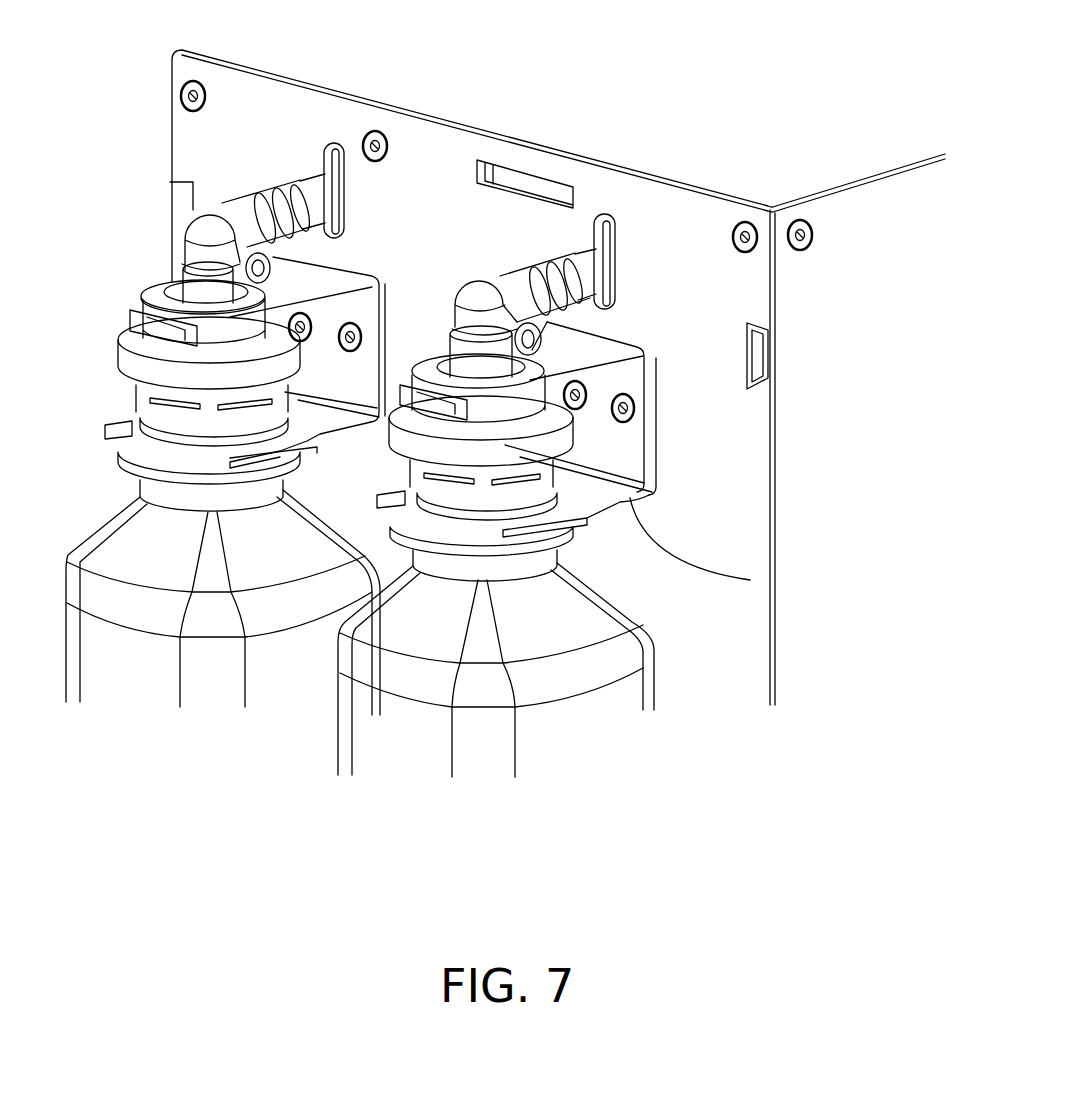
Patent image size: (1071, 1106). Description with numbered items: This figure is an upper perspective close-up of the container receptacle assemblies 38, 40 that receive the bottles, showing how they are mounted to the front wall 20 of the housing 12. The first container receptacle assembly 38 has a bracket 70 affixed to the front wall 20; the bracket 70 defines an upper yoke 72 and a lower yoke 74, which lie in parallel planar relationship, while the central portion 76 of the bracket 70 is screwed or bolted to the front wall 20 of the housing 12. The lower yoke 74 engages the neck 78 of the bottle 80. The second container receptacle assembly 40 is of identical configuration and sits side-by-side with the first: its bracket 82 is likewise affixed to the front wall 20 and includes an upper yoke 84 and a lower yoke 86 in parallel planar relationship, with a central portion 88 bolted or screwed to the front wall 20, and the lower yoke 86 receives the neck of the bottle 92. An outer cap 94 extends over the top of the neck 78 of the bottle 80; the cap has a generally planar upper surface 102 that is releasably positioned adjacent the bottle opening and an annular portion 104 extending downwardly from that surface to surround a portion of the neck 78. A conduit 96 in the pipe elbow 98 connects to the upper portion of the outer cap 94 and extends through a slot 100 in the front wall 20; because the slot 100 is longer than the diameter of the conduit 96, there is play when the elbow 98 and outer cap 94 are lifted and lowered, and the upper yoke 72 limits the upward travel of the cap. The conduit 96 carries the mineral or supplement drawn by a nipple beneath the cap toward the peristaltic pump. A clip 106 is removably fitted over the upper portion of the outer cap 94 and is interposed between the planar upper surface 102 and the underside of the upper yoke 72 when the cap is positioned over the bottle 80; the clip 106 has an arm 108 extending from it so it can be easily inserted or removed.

The housing 12 is at (873, 177).
The front wall 20 is at (750, 507).
The container receptacle assembly 38 is at (718, 470).
The container receptacle assembly 40 is at (94, 346).
The bracket 70 is at (590, 347).
The upper yoke 72 is at (593, 340).
The lower yoke 74 is at (750, 580).
The central portion 76 is at (648, 410).
The neck 78 is at (407, 482).
The bottle 80 is at (113, 447).
The bracket 82 is at (320, 280).
The upper yoke 84 is at (276, 290).
The lower yoke 86 is at (292, 429).
The central portion 88 is at (413, 330).
The bottle 92 is at (103, 540).
The outer cap 94 is at (560, 431).
The conduit 96 is at (517, 270).
The pipe elbow 98 is at (543, 267).
The slot 100 is at (615, 228).
The generally planar upper surface 102 is at (547, 398).
The annular portion 104 is at (460, 453).
The clip 106 is at (527, 381).
The arm 108 is at (418, 345).